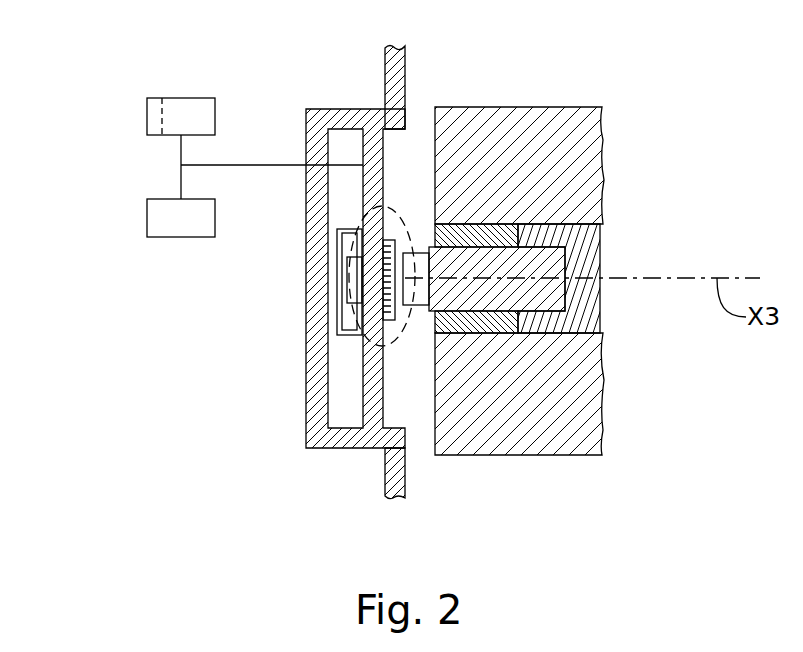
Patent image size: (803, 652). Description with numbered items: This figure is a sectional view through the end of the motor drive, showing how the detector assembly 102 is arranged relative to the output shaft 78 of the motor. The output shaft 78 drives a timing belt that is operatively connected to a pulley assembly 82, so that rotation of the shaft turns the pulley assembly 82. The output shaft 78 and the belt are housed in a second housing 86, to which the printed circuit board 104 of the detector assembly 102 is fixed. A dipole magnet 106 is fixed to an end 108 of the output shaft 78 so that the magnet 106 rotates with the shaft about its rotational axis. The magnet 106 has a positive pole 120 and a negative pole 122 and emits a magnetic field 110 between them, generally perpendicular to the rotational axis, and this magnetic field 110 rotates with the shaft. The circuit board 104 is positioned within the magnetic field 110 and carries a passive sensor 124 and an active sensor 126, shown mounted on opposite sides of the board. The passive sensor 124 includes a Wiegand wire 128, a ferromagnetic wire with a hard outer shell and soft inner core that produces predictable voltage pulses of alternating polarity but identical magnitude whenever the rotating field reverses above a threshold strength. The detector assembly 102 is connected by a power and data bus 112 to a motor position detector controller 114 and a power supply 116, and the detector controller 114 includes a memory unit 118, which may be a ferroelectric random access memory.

The output shaft 78 is at (607, 261).
The pulley assembly 82 is at (525, 97).
The second housing 86 is at (387, 483).
The detector assembly 102 is at (221, 278).
The printed circuit board 104 is at (362, 392).
The dipole magnet 106 is at (416, 258).
The end 108 is at (417, 308).
The magnetic field 110 is at (363, 333).
The power and data bus 112 is at (248, 165).
The motor position detector controller 114 is at (176, 92).
The power supply 116 is at (146, 223).
The memory unit 118 is at (155, 121).
The positive pole 120 is at (423, 258).
The negative pole 122 is at (410, 306).
The passive sensor 124 is at (195, 290).
The active sensor 126 is at (383, 240).
The Wiegand wire 128 is at (347, 292).